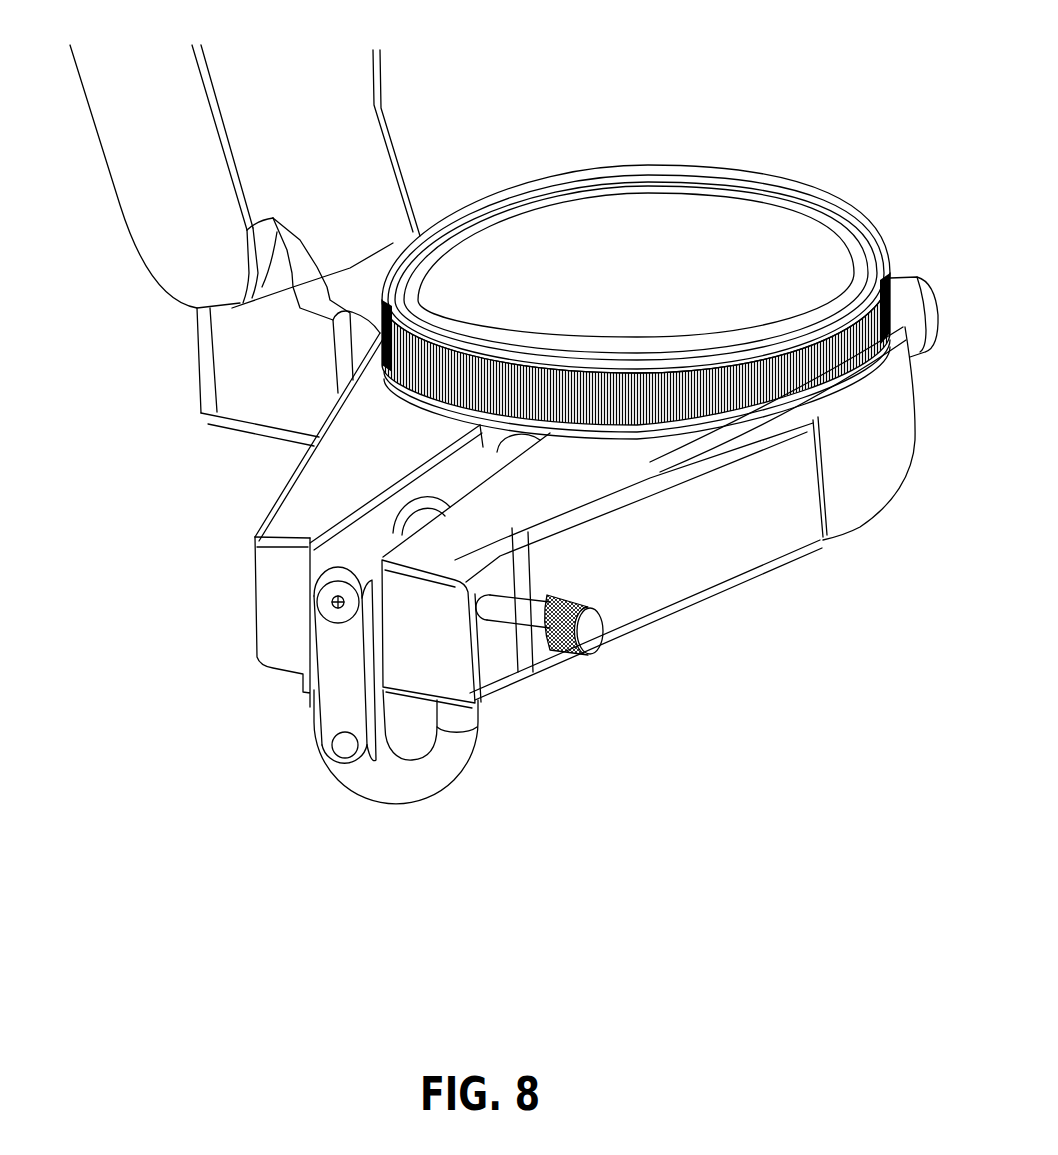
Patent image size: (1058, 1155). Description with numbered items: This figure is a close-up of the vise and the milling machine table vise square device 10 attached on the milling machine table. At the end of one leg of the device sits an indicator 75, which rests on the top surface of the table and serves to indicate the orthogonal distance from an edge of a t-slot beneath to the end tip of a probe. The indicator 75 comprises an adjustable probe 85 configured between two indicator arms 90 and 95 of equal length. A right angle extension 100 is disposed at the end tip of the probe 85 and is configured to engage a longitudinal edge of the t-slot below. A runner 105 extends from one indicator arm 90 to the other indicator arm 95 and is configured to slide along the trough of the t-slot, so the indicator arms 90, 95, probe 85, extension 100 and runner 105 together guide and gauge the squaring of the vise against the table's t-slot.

The milling machine table vise square device 10 is at (550, 74).
The indicator 75 is at (618, 305).
The adjustable probe 85 is at (452, 497).
The indicator arm 90 is at (653, 560).
The indicator arm 95 is at (322, 478).
The right angle extension 100 is at (347, 694).
The runner 105 is at (460, 770).